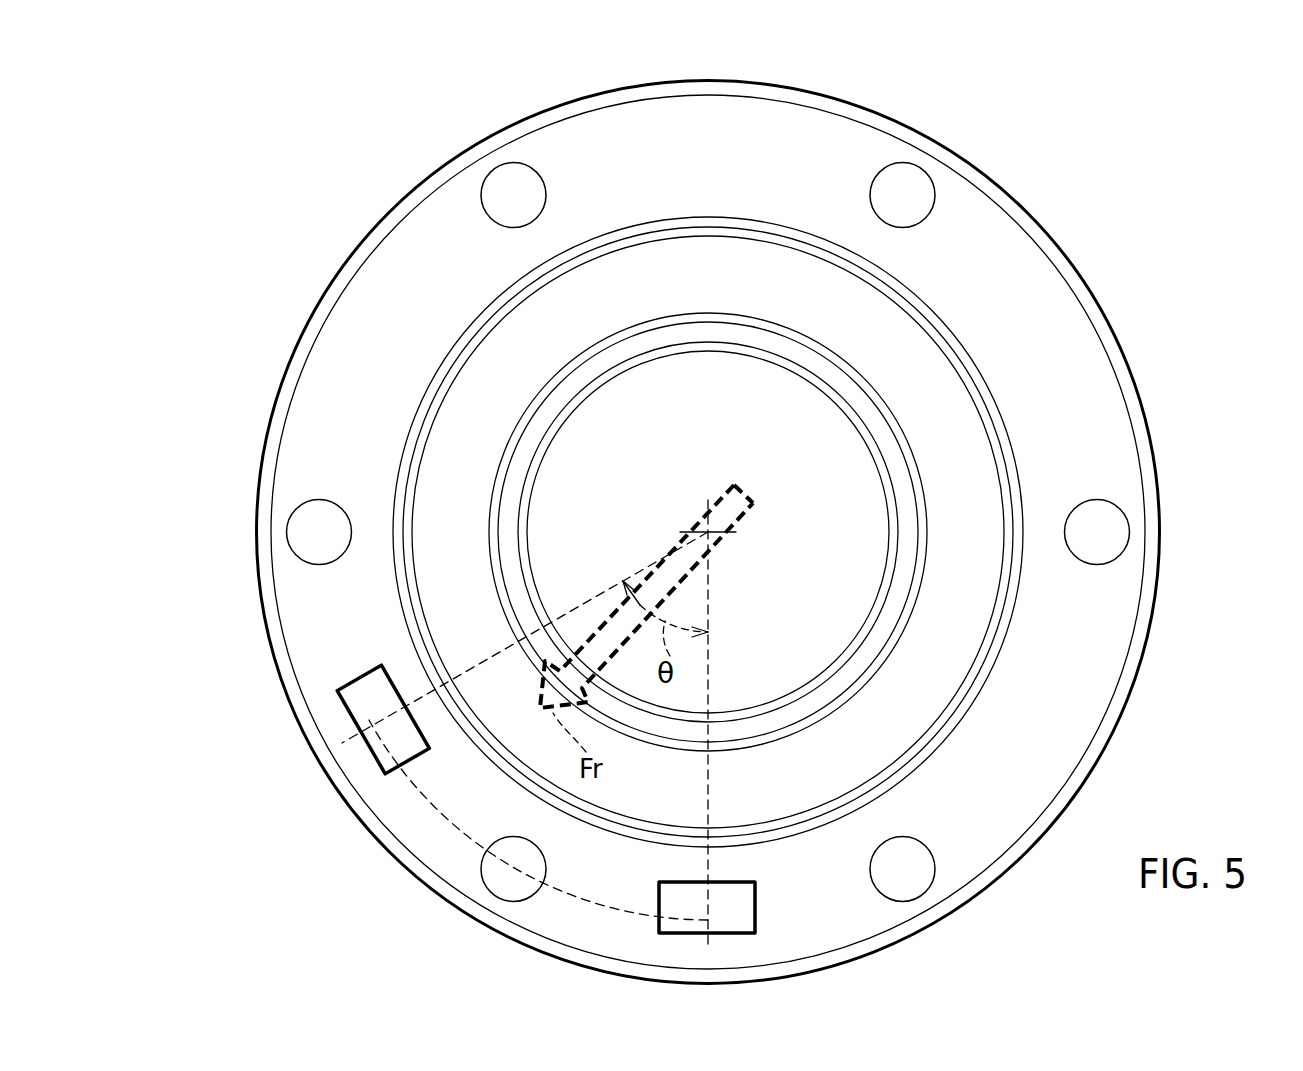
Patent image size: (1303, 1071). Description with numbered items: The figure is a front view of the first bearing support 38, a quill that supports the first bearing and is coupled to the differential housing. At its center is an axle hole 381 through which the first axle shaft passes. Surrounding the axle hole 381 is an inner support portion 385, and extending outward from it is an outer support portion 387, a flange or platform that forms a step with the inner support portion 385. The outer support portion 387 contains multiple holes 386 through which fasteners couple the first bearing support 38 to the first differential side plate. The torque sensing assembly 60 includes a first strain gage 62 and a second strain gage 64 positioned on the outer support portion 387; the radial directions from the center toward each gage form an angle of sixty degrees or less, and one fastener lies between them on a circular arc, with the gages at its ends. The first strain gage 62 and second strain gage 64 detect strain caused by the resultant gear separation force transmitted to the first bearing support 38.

The first bearing support 38 is at (353, 123).
The axle hole 381 is at (708, 532).
The inner support portion 385 is at (477, 484).
The holes 386 is at (492, 873).
The outer support portion 387 is at (372, 421).
The torque sensing assembly 60 is at (478, 799).
The first strain gage 62 is at (737, 896).
The second strain gage 64 is at (368, 702).